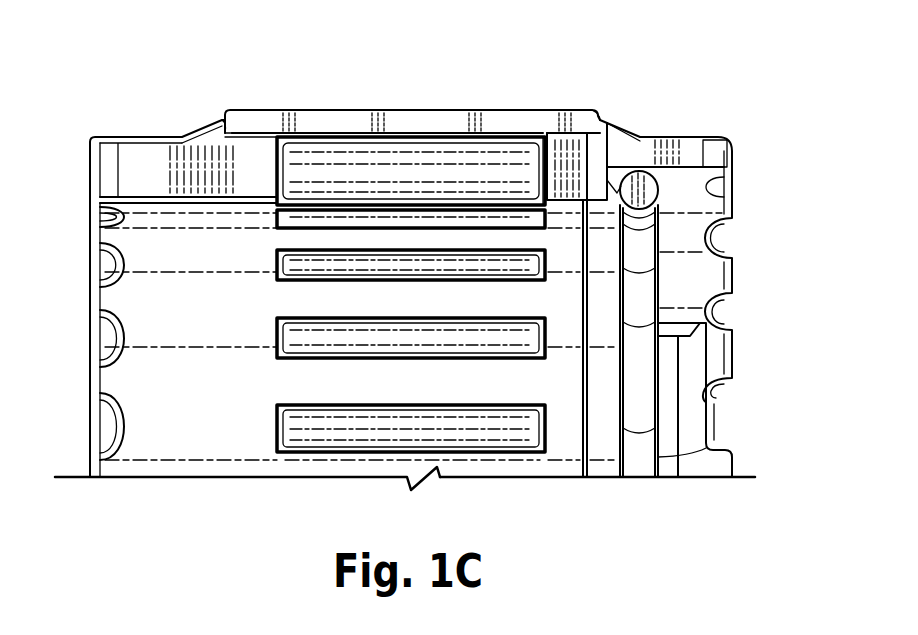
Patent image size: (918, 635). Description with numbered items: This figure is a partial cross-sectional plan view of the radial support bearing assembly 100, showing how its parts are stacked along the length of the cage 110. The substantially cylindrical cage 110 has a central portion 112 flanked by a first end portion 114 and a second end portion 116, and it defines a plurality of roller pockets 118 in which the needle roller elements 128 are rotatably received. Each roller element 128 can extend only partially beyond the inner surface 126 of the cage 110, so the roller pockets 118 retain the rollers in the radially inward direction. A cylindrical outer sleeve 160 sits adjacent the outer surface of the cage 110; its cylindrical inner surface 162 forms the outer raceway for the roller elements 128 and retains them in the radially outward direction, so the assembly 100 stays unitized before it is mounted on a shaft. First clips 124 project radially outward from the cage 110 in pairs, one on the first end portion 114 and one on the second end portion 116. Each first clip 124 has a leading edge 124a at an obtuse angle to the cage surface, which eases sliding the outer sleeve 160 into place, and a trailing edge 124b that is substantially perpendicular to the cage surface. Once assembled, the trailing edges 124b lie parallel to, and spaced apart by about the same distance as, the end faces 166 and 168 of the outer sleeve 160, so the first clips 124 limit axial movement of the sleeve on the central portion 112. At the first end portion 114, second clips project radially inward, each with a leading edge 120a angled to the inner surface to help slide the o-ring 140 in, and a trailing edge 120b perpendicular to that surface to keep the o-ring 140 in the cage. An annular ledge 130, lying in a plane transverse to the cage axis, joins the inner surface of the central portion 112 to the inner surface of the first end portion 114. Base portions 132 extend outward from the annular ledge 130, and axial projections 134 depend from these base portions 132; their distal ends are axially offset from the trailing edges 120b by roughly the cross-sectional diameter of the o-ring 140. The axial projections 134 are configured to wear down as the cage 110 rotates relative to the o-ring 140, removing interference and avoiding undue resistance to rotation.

The radial support bearing assembly 100 is at (90, 92).
The cage 110 is at (145, 135).
The central portion 112 is at (400, 378).
The first end portion 114 is at (682, 485).
The second end portion 116 is at (150, 487).
The roller pockets 118 is at (542, 170).
The leading edge 120a is at (693, 370).
The trailing edge 120b is at (645, 422).
The first clips 124 is at (197, 120).
The leading edge 124a is at (623, 130).
The trailing edge 124b is at (232, 127).
The inner surface 126 is at (222, 203).
The roller elements 128 is at (527, 432).
The annular ledge 130 is at (584, 437).
The base portion 132 is at (593, 177).
The axial projections 134 is at (618, 183).
The o-ring 140 is at (642, 298).
The outer sleeve 160 is at (415, 110).
The inner surface 162 is at (312, 137).
The end face 166 is at (601, 118).
The end face 168 is at (227, 127).